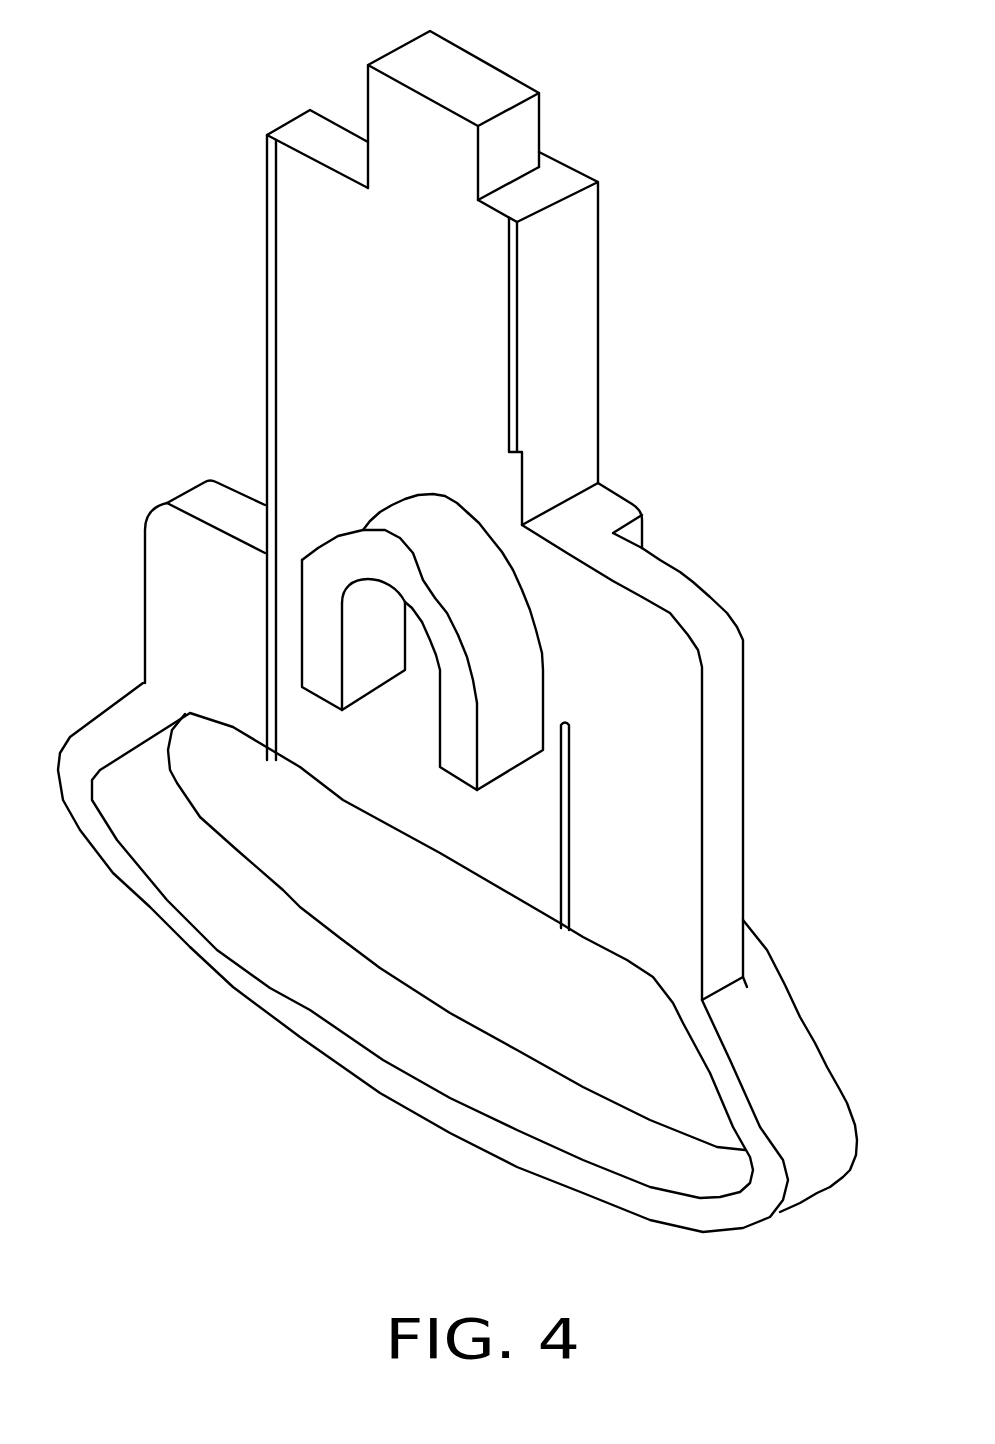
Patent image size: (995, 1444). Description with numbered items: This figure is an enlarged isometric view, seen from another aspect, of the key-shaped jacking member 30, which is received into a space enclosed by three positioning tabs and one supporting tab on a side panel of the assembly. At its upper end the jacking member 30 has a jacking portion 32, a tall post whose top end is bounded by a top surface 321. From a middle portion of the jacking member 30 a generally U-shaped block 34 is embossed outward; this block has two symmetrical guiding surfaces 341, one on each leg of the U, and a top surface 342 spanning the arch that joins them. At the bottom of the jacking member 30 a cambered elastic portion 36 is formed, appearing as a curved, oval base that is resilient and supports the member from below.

The jacking member 30 is at (633, 313).
The jacking portion 32 is at (481, 274).
The top surface 321 is at (453, 70).
The U-shaped block 34 is at (414, 582).
The guiding surfaces 341 is at (377, 520).
The top surface 342 is at (430, 523).
The cambered elastic portion 36 is at (427, 1057).